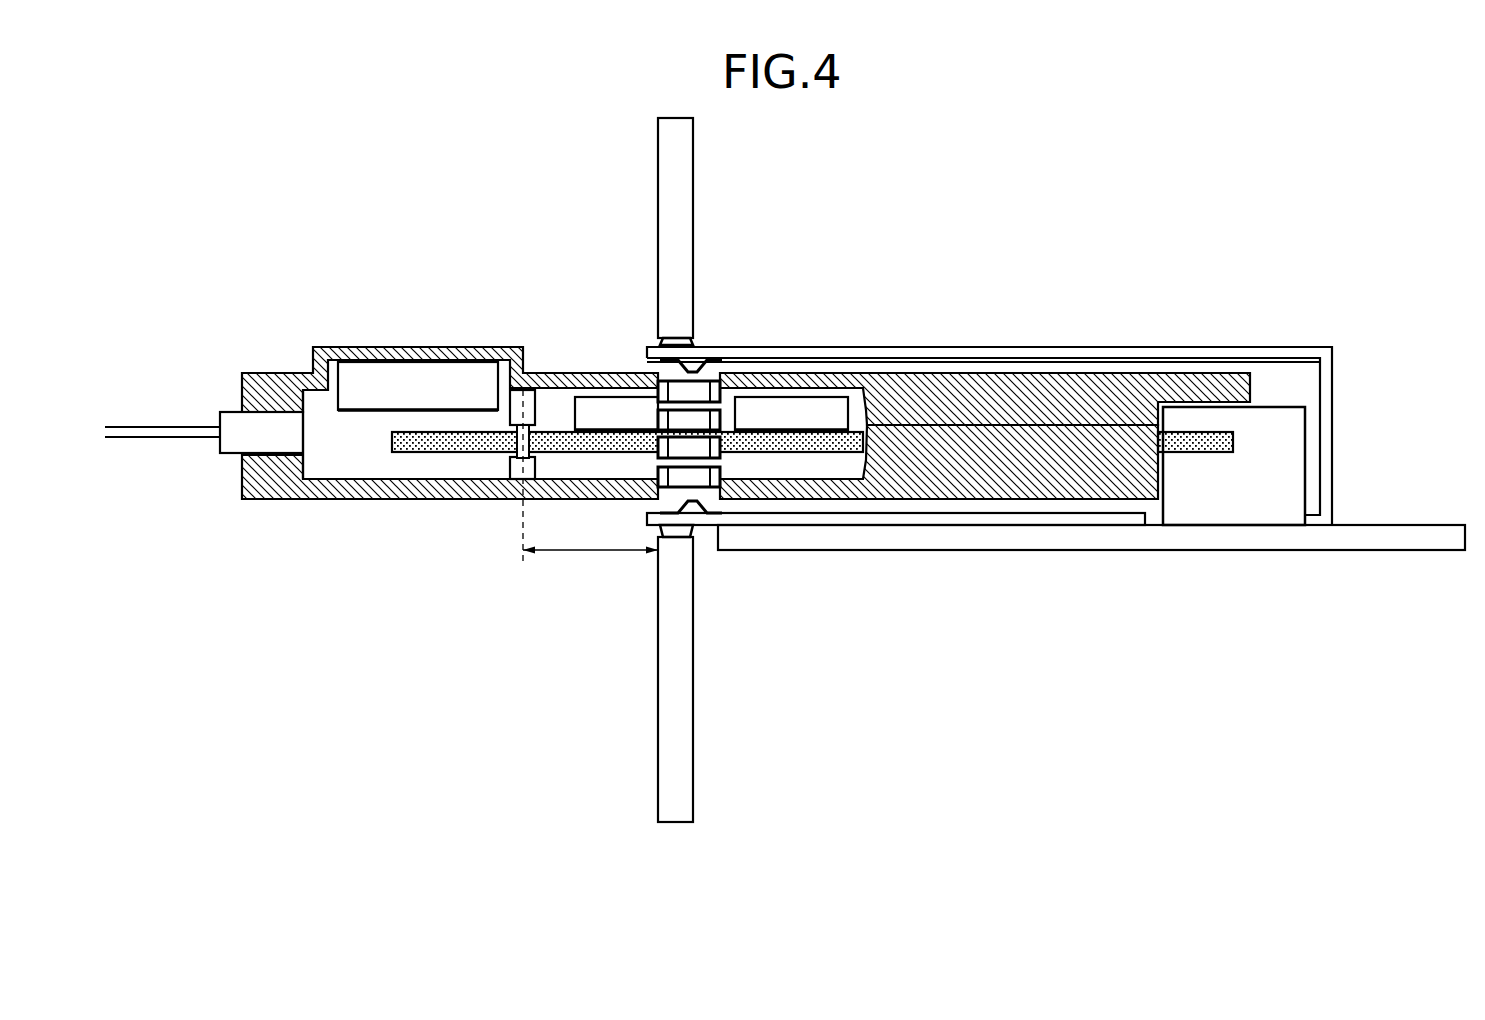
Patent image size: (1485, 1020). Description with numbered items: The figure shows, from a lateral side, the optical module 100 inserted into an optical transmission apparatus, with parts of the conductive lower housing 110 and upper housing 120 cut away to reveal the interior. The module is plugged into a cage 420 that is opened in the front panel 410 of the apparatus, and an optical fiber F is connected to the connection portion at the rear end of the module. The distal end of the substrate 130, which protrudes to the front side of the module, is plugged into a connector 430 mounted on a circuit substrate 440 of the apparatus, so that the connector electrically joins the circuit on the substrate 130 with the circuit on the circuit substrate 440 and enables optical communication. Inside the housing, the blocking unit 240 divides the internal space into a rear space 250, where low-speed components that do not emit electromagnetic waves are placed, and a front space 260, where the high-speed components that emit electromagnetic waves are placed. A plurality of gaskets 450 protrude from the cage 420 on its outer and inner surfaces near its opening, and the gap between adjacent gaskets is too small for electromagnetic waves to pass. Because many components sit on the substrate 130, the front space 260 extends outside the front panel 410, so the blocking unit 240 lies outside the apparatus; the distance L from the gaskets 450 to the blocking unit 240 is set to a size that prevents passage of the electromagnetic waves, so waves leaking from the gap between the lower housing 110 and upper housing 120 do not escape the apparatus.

The optical module 100 is at (308, 322).
The lower housing 110 is at (1003, 480).
The upper housing 120 is at (1018, 388).
The substrate 130 is at (1203, 432).
The blocking unit 240 is at (556, 400).
The rear space 250 is at (345, 467).
The front space 260 is at (752, 470).
The front panel 410 is at (658, 181).
The cage 420 is at (890, 347).
The connector 430 is at (1272, 506).
The circuit substrate 440 is at (1125, 550).
The gaskets 450 is at (722, 388).
The optical fiber F is at (158, 438).
The distance L is at (590, 564).